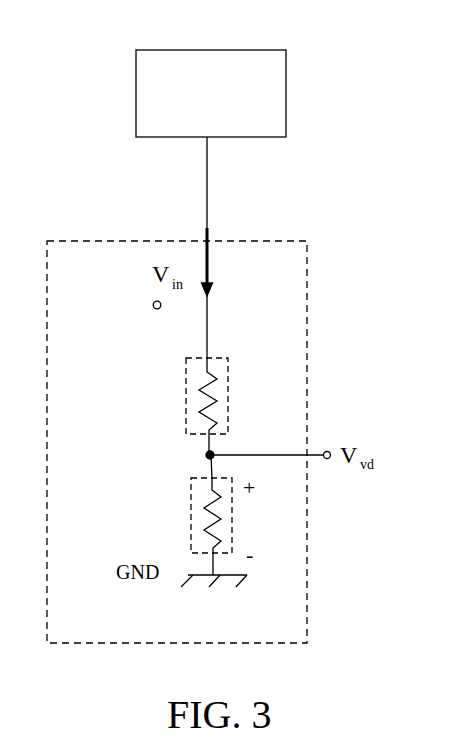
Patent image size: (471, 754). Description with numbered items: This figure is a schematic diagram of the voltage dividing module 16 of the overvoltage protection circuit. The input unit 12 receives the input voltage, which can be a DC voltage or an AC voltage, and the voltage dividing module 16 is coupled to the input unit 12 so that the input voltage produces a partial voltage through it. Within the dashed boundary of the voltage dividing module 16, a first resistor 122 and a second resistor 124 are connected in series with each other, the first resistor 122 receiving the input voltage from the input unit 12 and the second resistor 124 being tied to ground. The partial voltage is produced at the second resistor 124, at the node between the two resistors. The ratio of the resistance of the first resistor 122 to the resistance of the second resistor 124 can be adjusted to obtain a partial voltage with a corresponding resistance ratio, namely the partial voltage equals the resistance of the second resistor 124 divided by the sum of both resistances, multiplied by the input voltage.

The input unit 12 is at (233, 50).
The voltage dividing module 16 is at (90, 240).
The first resistor 122 is at (186, 398).
The second resistor 124 is at (191, 518).